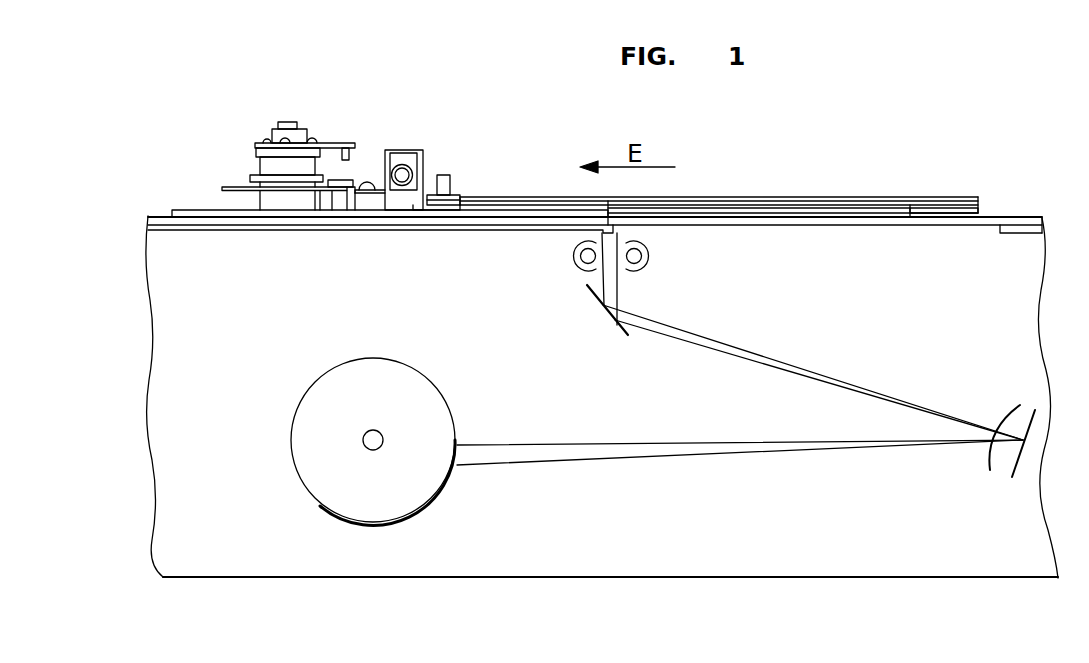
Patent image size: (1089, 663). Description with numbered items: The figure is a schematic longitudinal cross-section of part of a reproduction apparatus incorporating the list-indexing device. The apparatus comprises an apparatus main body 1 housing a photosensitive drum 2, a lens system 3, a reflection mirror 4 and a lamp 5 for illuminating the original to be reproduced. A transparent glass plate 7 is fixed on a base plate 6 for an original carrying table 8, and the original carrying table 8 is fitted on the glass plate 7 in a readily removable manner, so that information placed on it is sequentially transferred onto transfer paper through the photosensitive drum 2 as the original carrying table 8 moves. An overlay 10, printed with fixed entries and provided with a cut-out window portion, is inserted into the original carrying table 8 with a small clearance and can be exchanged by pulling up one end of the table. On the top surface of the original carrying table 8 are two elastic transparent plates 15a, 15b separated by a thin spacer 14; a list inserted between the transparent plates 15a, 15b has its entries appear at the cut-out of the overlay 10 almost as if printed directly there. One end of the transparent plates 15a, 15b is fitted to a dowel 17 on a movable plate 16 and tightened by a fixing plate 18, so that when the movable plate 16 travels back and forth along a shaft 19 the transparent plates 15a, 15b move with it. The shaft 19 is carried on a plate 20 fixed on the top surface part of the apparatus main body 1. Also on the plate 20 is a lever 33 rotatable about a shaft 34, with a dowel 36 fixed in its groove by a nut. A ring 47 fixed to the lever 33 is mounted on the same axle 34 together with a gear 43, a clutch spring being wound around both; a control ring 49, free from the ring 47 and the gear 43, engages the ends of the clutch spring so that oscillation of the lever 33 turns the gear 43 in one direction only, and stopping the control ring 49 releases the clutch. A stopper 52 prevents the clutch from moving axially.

The apparatus main body 1 is at (1050, 297).
The photosensitive drum 2 is at (415, 388).
The lens system 3 is at (1005, 457).
The reflection mirror 4 is at (602, 306).
The lamp 5 is at (647, 256).
The base plate 6 is at (512, 230).
The transparent glass plate 7 is at (868, 218).
The original carrying table 8 is at (945, 218).
The overlay 10 is at (787, 218).
The spacer 14 is at (930, 208).
The transparent plate 15a is at (745, 197).
The transparent plate 15b is at (782, 197).
The movable plate 16 is at (413, 150).
The dowel 17 is at (450, 180).
The fixing plate 18 is at (460, 197).
The shaft 19 is at (404, 174).
The plate 20 is at (192, 210).
The lever 33 is at (337, 143).
The shaft 34 is at (285, 122).
The dowel 36 is at (350, 152).
The gear 43 is at (237, 191).
The ring 47 is at (256, 149).
The control ring 49 is at (263, 168).
The stopper 52 is at (300, 132).